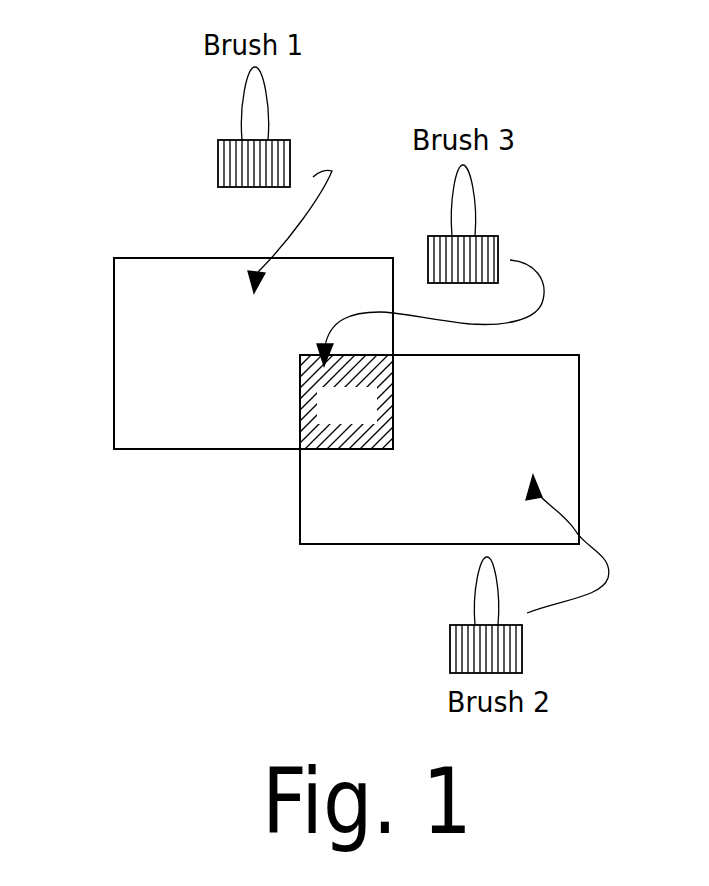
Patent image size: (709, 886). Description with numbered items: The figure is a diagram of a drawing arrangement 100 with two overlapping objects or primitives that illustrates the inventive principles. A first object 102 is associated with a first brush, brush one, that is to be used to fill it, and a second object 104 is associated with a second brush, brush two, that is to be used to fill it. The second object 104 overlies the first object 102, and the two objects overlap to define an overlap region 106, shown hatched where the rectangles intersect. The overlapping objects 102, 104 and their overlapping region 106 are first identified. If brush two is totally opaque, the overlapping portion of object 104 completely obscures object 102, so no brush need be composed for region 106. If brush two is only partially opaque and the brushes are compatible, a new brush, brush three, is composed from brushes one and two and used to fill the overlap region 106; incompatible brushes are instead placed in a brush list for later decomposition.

The paint system / canvas with brush strokes 100 is at (132, 147).
The object 102 is at (114, 258).
The object 104 is at (579, 355).
The overlap region 106 is at (346, 402).